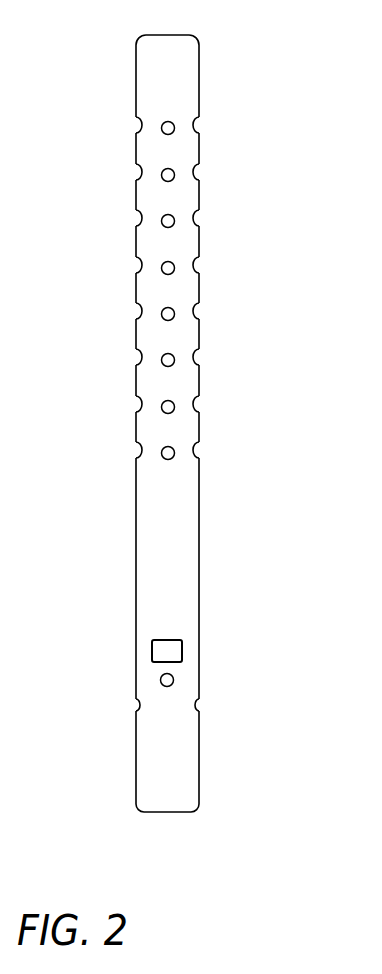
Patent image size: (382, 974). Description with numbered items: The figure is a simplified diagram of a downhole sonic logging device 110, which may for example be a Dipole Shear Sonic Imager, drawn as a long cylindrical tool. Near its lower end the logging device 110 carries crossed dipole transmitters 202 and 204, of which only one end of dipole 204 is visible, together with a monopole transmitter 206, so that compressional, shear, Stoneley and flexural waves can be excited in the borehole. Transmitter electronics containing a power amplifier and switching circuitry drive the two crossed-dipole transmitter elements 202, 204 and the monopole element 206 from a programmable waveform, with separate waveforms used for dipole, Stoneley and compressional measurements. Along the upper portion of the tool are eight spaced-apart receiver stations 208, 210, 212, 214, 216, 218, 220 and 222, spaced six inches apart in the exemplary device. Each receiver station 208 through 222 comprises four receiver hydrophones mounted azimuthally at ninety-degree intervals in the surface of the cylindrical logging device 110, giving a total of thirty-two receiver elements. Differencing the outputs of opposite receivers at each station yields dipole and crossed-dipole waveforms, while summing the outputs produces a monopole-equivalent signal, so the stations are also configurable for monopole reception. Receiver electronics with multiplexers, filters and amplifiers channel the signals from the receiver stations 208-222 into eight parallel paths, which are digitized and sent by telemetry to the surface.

The logging device 110 is at (100, 563).
The crossed dipole transmitter 202 is at (135, 704).
The crossed dipole transmitter 204 is at (174, 680).
The monopole transmitter 206 is at (180, 648).
The receiver station 208 is at (134, 447).
The receiver station 210 is at (204, 400).
The receiver station 212 is at (134, 356).
The receiver station 214 is at (204, 311).
The receiver station 216 is at (134, 263).
The receiver station 218 is at (204, 218).
The receiver station 220 is at (134, 170).
The receiver station 222 is at (204, 125).